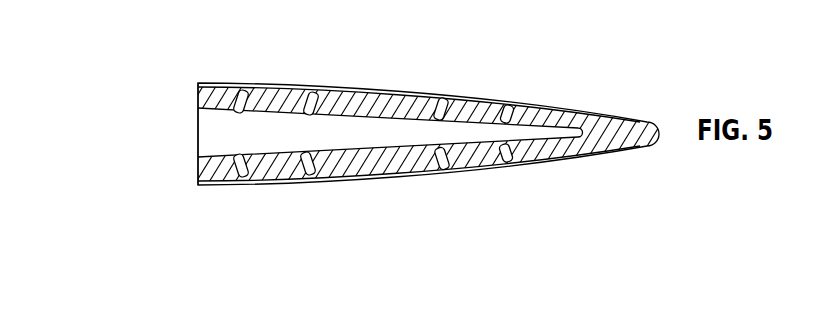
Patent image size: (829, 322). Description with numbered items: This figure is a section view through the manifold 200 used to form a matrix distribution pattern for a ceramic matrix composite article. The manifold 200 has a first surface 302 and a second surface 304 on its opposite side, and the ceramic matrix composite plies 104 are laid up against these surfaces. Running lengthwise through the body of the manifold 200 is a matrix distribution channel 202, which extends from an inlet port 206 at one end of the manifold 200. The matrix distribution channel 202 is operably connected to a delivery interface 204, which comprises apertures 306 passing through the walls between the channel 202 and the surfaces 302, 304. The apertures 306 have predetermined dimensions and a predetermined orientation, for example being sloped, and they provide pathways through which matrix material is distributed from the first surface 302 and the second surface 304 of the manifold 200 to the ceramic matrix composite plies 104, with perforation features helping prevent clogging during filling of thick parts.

The manifold 200 is at (114, 126).
The matrix distribution channels 202 is at (243, 134).
The delivery interface 204 is at (247, 175).
The inlet ports 206 is at (197, 118).
The first surface 302 is at (352, 92).
The second surface 304 is at (412, 177).
The apertures 306 is at (225, 92).
The ceramic matrix composite plies 104 is at (488, 100).